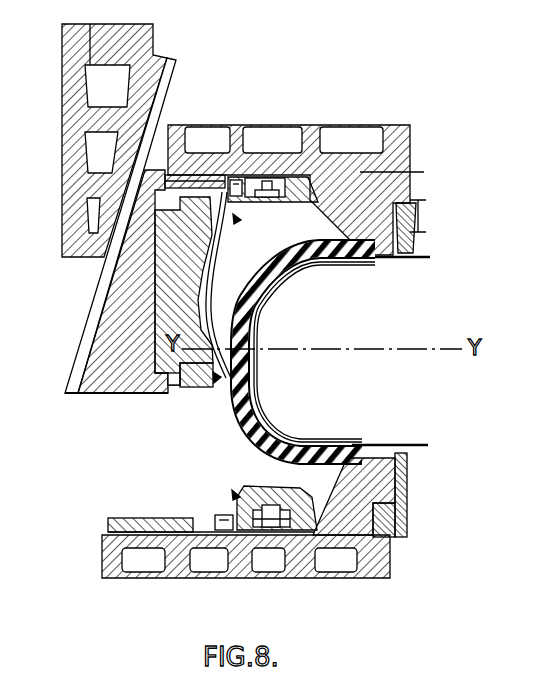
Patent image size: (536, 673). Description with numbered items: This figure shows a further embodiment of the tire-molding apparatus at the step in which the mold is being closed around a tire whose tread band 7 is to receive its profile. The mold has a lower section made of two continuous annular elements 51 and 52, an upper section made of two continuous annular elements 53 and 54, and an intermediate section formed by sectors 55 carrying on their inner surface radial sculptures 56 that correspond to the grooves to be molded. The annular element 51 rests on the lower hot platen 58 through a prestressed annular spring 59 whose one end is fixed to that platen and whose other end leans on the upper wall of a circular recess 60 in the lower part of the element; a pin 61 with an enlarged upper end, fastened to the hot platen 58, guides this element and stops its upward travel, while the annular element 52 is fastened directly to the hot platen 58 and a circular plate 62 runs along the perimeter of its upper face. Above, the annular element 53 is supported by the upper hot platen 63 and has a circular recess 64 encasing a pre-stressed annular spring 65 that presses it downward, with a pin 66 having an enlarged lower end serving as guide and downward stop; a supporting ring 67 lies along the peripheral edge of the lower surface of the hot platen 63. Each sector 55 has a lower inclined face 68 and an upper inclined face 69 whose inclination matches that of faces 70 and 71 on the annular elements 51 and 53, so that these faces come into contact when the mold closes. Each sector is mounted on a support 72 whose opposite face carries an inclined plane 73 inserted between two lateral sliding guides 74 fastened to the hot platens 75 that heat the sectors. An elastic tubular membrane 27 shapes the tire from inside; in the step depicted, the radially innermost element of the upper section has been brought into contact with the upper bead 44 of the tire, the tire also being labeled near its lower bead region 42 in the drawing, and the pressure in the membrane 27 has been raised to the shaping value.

The tread band 7 is at (245, 393).
The elastic tubular membrane 27 is at (257, 322).
The lower flange 42 is at (357, 448).
The upper bead 44 is at (352, 259).
The annular element 51 is at (258, 508).
The annular element 52 is at (393, 490).
The annular element 53 is at (258, 179).
The annular element 54 is at (385, 192).
The sectors 55 is at (140, 372).
The radial sculptures 56 is at (182, 378).
The hot platen 58 is at (102, 556).
The prestressed annular spring 59 is at (284, 518).
The circular recess 60 is at (263, 517).
The pin 61 is at (222, 518).
The circular plate 62 is at (125, 520).
The hot platen 63 is at (312, 127).
The circular recess 64 is at (290, 176).
The pre-stressed annular spring 65 is at (273, 180).
The pin 66 is at (237, 172).
The supporting ring 67 is at (165, 181).
The inclined face 68 is at (205, 390).
The inclined face 69 is at (225, 200).
The face 70 is at (235, 496).
The face 71 is at (236, 219).
The support 72 is at (90, 392).
The inclined plane 73 is at (74, 383).
The lateral sliding guides 74 is at (172, 60).
The hot platens 75 is at (62, 148).